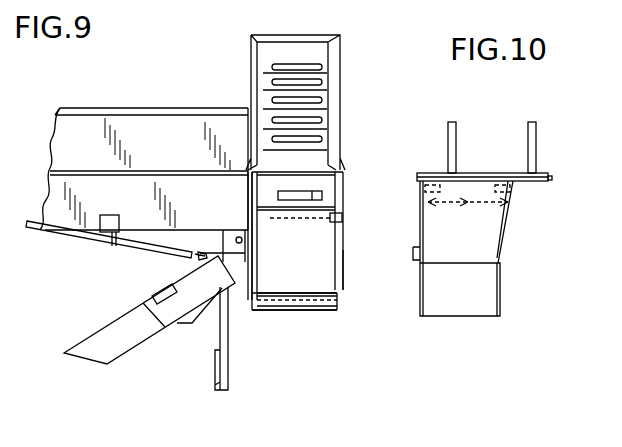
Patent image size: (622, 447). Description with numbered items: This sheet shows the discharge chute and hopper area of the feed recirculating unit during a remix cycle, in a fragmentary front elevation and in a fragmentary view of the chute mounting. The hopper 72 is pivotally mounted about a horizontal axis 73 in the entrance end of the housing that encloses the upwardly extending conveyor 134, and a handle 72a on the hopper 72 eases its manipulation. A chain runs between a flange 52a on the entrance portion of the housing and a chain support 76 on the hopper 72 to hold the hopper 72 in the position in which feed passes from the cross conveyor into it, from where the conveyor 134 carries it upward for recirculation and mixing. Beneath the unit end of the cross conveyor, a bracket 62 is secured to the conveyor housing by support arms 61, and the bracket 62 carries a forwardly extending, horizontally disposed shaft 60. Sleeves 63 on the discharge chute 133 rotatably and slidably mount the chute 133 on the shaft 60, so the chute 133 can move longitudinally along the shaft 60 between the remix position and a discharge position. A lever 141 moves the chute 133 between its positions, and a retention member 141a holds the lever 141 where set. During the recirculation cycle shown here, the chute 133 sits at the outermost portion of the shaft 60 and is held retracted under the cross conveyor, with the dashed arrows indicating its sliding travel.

In FIG. 9, the conveyor 134 is at (265, 71).
In FIG. 9, the support arms 61 is at (248, 186).
In FIG. 10, the support arms 61 is at (448, 134).
In FIG. 9, the shaft 60 is at (239, 236).
In FIG. 10, the shaft 60 is at (534, 182).
In FIG. 9, the hopper 72 is at (290, 249).
In FIG. 9, the handle 72a is at (322, 197).
In FIG. 9, the chain support 76 is at (342, 218).
In FIG. 9, the flange 52a is at (345, 290).
In FIG. 9, the horizontal axis 73 is at (298, 300).
In FIG. 9, the lever 141 is at (80, 236).
In FIG. 9, the retention member 141a is at (113, 237).
In FIG. 9, the discharge chute 133 is at (130, 306).
In FIG. 10, the discharge chute 133 is at (505, 252).
In FIG. 10, the bracket 62 is at (497, 172).
In FIG. 10, the sleeves 63 is at (430, 195).